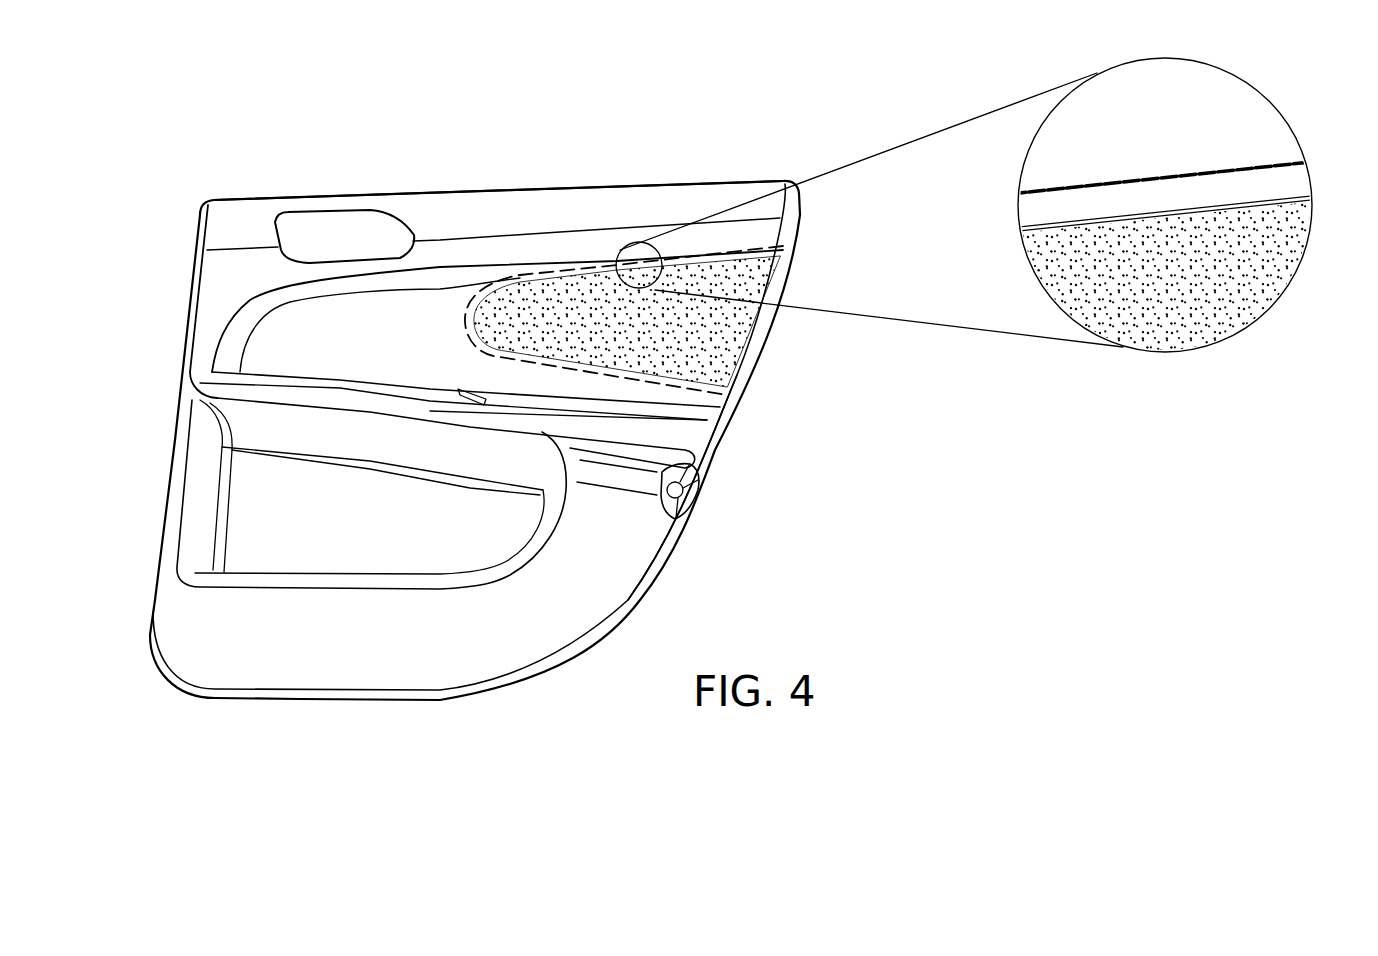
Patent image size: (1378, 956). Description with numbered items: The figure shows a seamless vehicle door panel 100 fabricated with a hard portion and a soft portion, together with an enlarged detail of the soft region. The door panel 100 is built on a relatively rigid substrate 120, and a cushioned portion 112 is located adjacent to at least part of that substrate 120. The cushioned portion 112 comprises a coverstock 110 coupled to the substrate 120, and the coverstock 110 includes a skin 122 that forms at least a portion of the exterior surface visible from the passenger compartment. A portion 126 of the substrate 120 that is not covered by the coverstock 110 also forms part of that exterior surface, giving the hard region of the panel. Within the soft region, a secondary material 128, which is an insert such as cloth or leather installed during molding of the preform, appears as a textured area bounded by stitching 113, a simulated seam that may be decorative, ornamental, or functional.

The door panel 100 is at (517, 708).
The coverstock 110 is at (712, 186).
The cushioned portion 112 is at (456, 210).
The stitching 113 is at (1255, 160).
The substrate 120 is at (583, 618).
The skin 122 is at (603, 203).
The portion of substrate 126 is at (678, 578).
The secondary material 128 is at (716, 358).